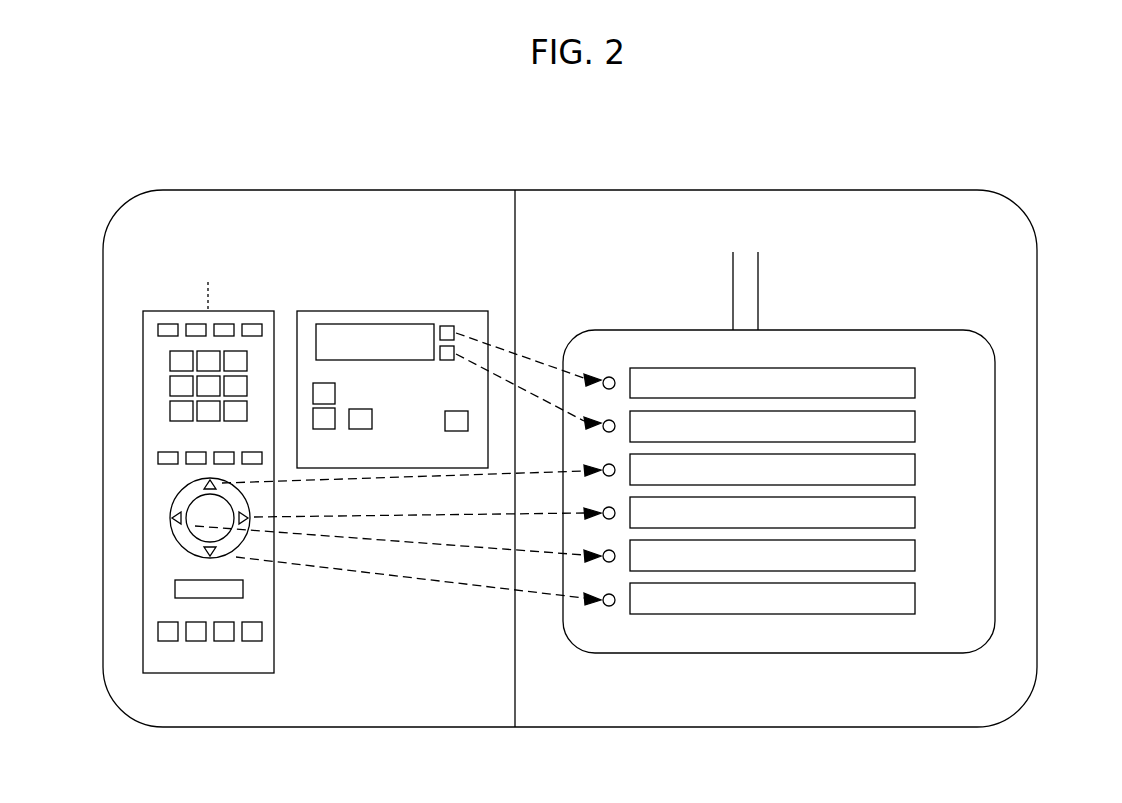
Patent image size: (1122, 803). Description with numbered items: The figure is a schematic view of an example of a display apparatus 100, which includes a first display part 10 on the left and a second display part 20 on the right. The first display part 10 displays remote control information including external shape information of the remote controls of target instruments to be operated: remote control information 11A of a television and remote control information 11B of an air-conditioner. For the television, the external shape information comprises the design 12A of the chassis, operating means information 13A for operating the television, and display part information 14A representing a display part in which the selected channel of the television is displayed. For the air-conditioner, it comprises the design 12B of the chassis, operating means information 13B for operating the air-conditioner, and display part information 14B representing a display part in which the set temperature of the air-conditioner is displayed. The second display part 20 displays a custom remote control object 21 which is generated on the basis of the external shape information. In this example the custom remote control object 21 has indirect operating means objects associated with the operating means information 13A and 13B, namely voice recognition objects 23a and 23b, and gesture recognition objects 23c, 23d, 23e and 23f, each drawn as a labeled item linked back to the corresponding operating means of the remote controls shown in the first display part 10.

The display apparatus 100 is at (1003, 188).
The first display part 10 is at (454, 193).
The second display part 20 is at (575, 196).
The remote control information of a television 11A is at (236, 301).
The design of a chassis 12A is at (172, 311).
The operating means information 13A is at (250, 497).
The display part information 14A is at (243, 597).
The remote control information of an air-conditioner 11B is at (440, 296).
The design of a chassis 12B is at (343, 311).
The operating means information 13B is at (455, 326).
The display part information 14B is at (417, 324).
The custom remote control object 21 is at (972, 330).
The voice recognition object 23a is at (918, 382).
The voice recognition object 23b is at (918, 426).
The gesture recognition object 23c is at (918, 469).
The gesture recognition object 23d is at (918, 512).
The gesture recognition object 23e is at (918, 555).
The gesture recognition object 23f is at (918, 599).